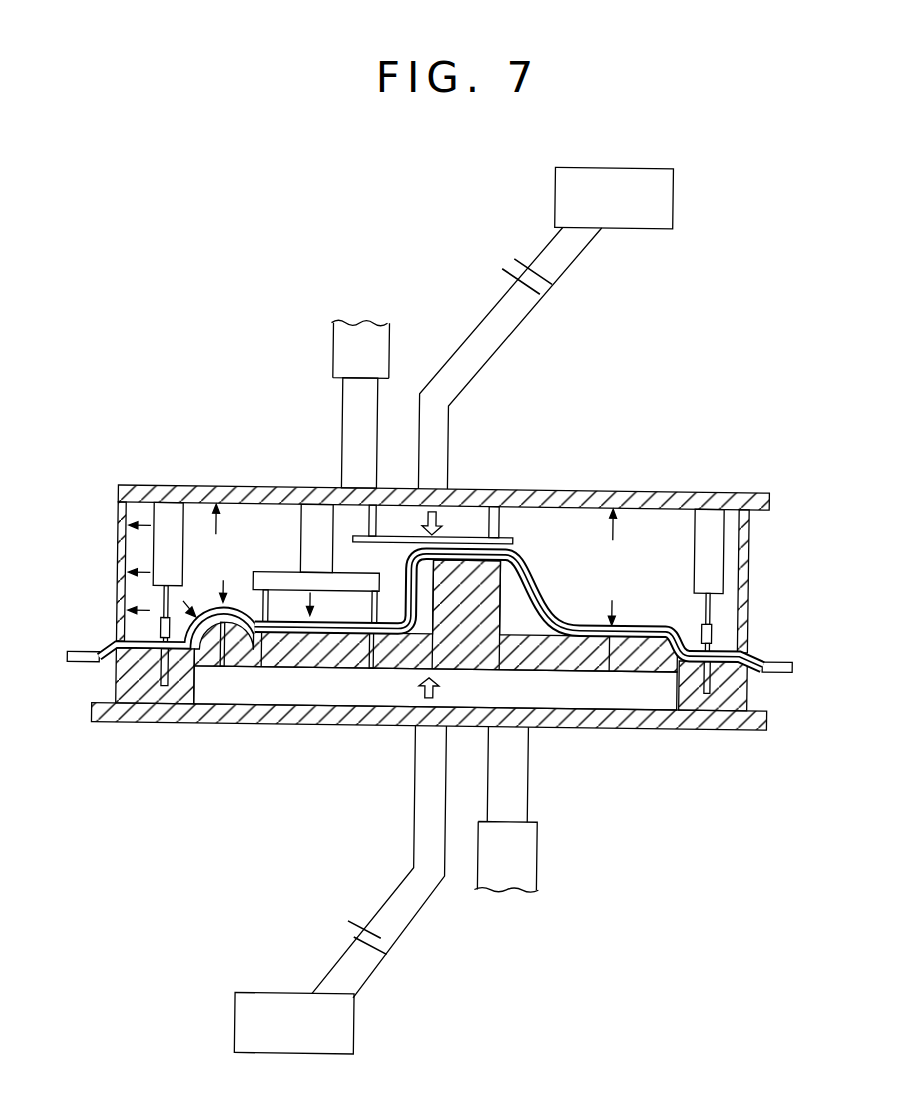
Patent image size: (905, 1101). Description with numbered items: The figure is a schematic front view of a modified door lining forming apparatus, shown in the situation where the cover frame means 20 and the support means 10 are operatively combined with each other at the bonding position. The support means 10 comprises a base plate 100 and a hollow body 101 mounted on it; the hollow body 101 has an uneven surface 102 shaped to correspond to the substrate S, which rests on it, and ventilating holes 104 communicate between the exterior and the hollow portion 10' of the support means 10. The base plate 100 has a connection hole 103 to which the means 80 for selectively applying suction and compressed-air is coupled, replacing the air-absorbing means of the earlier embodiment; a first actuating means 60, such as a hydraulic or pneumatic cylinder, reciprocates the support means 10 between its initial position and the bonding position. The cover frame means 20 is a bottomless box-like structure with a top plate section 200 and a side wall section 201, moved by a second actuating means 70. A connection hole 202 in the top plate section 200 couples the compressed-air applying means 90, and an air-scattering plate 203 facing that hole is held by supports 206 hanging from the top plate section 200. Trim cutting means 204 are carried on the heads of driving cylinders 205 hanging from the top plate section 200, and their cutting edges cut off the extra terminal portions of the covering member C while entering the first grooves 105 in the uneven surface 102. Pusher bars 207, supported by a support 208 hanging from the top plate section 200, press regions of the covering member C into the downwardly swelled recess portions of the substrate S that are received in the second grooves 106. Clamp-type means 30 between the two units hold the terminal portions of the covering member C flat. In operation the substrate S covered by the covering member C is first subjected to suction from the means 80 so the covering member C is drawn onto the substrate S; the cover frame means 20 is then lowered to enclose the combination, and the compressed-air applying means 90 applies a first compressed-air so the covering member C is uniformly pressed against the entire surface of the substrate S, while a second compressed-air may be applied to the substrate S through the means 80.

The cover frame means 20 is at (573, 485).
The top plate section 200 is at (652, 485).
The side wall section 201 is at (117, 525).
The connection hole 202 is at (424, 485).
The air-scattering plate 203 is at (517, 485).
The trim cutting means 204 is at (163, 600).
The driving cylinders 205 is at (163, 515).
The supports 206 is at (440, 537).
The pusher bars 207 is at (253, 580).
The support 208 is at (316, 518).
The support means 10 is at (101, 692).
The hollow portion 10' is at (671, 751).
The base plate 100 is at (150, 722).
The hollow body 101 is at (528, 672).
The uneven surface 102 is at (645, 630).
The connection hole 103 is at (417, 722).
The ventilating holes 104 is at (226, 722).
The first grooves 105 is at (107, 722).
The second grooves 106 is at (256, 722).
The means for supporting and maintaining the covering member flat 30 is at (88, 652).
The first actuating means 60 is at (527, 828).
The second actuating means 70 is at (330, 352).
The means for selectively applying suction and compressed-air 80 is at (240, 1023).
The compressed-air applying means 90 is at (668, 182).
The covering member C is at (537, 581).
The substrate S is at (552, 620).